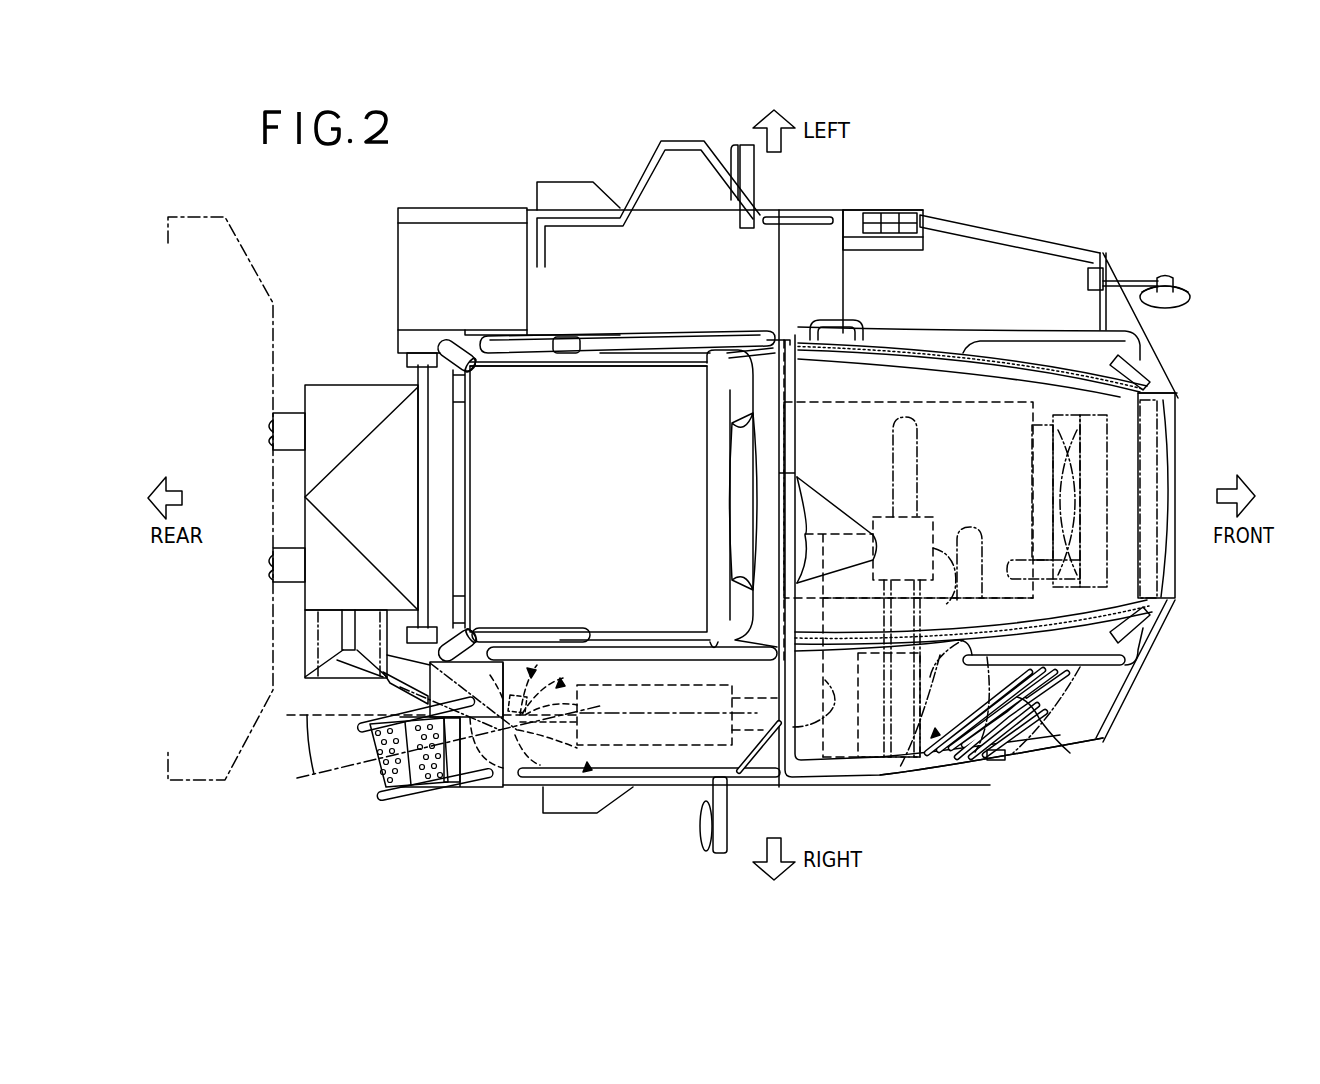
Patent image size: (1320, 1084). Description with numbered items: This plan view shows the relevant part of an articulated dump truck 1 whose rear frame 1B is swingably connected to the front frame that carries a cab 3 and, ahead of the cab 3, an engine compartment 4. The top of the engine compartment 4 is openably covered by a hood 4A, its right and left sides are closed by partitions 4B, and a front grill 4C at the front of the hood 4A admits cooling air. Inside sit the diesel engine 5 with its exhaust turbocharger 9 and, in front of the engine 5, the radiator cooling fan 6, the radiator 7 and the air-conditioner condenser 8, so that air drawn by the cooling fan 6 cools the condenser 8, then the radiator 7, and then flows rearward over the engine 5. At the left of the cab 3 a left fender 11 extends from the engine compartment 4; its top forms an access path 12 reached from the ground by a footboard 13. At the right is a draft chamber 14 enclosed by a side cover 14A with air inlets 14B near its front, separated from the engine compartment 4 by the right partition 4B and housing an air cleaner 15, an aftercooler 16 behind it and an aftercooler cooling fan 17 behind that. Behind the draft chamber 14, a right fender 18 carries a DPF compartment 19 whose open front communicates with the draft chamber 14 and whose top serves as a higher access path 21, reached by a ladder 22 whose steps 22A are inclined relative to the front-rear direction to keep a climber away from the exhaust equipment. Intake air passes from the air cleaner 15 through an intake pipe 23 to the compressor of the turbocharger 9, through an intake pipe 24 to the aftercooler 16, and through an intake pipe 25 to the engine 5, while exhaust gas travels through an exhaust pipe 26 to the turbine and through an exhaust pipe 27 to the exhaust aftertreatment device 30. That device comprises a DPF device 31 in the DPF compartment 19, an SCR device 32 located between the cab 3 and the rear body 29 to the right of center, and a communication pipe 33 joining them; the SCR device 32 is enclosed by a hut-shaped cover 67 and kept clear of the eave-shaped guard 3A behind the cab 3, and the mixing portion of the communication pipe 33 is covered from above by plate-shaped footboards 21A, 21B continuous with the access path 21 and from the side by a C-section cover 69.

The dump truck 1 is at (1027, 162).
The rear frame 1B is at (287, 400).
The cab 3 is at (637, 377).
The guard 3A is at (353, 400).
The engine compartment 4 is at (933, 393).
The hood 4A is at (890, 372).
The partitions 4B is at (1007, 357).
The front grill 4C is at (1158, 470).
The engine 5 is at (823, 420).
The radiator cooling fan 6 is at (1070, 397).
The radiator 7 is at (1150, 357).
The air-conditioner condenser 8 is at (1157, 423).
The exhaust turbocharger 9 is at (882, 517).
The left fender 11 is at (577, 240).
The access path 12 is at (957, 257).
The footboard 13 is at (872, 215).
The draft chamber 14 is at (952, 757).
The side cover 14A is at (850, 748).
The air inlets 14B is at (1052, 700).
The air cleaner 15 is at (1013, 760).
The aftercooler 16 is at (903, 760).
The aftercooler cooling fan 17 is at (872, 745).
The right fender 18 is at (587, 763).
The DPF compartment 19 is at (653, 760).
The access path 21 is at (543, 783).
The footboard 21A is at (475, 780).
The footboard 21B is at (493, 665).
The ladder 22 is at (397, 800).
The steps 22A is at (385, 790).
The intake pipe 23 is at (943, 543).
The intake pipe 24 is at (893, 610).
The intake pipe 25 is at (980, 553).
The exhaust pipe 26 is at (913, 453).
The exhaust pipe 27 is at (838, 694).
The rear body 29 is at (262, 282).
The exhaust aftertreatment device 30 is at (548, 675).
The DPF device 31 is at (638, 682).
The SCR device 32 is at (307, 637).
The communication pipe 33 is at (480, 655).
The cover 67 is at (303, 658).
The cover 69 is at (383, 688).